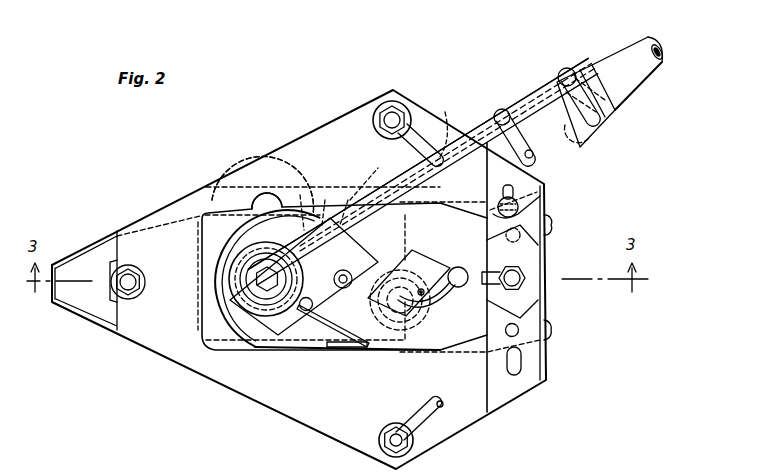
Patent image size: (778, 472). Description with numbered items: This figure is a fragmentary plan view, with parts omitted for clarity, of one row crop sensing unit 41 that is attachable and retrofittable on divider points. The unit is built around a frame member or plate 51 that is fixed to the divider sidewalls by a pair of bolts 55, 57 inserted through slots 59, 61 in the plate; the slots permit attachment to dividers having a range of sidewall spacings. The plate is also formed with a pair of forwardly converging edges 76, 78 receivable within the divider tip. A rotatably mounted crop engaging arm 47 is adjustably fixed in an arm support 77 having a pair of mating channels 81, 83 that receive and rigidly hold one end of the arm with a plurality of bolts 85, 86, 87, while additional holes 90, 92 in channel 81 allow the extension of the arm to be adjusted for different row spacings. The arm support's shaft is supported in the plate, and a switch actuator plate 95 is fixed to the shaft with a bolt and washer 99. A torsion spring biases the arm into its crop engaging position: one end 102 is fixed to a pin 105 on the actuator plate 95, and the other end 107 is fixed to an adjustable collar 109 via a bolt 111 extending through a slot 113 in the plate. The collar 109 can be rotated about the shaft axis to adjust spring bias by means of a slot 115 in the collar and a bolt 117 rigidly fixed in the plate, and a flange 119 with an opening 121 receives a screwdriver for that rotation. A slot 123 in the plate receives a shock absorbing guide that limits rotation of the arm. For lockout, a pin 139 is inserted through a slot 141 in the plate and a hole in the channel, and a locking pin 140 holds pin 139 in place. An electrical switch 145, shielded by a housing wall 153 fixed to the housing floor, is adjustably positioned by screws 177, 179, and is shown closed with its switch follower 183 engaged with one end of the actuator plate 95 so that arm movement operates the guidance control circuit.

The sensing unit 41 is at (150, 170).
The crop engaging arm 47 is at (625, 65).
The frame member 51 is at (266, 398).
The bolt 55 is at (388, 428).
The bolt 57 is at (388, 102).
The slot 59 is at (443, 404).
The slot 61 is at (415, 134).
The forwardly converging edge 76 is at (149, 349).
The arm support 77 is at (528, 96).
The forwardly converging edge 78 is at (156, 208).
The channel 81 is at (548, 95).
The channel 83 is at (590, 143).
The bolt 85 is at (362, 192).
The bolt 86 is at (500, 110).
The bolt 87 is at (573, 72).
The additional hole 90 is at (302, 200).
The additional hole 92 is at (447, 110).
The switch actuator plate 95 is at (303, 312).
The washer 99 is at (245, 463).
The spring end 102 is at (280, 340).
The pin 105 is at (338, 290).
The spring end 107 is at (340, 345).
The adjustable collar 109 is at (272, 185).
The bolt 111 is at (348, 200).
The slot 113 is at (325, 200).
The slot 115 is at (215, 190).
The bolt 117 is at (264, 190).
The flange 119 is at (198, 219).
The opening 121 is at (197, 280).
The slot 123 is at (423, 250).
The pin 139 is at (519, 205).
The locking pin 140 is at (545, 222).
The slot 141 is at (513, 190).
The electrical switch 145 is at (405, 330).
The wall 153 is at (250, 348).
The screw 177 is at (432, 268).
The screw 179 is at (420, 303).
The switch follower 183 is at (368, 350).